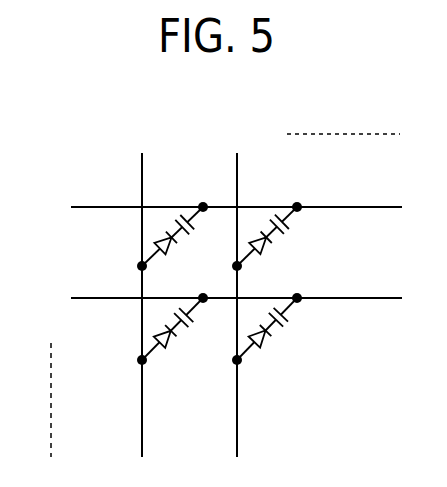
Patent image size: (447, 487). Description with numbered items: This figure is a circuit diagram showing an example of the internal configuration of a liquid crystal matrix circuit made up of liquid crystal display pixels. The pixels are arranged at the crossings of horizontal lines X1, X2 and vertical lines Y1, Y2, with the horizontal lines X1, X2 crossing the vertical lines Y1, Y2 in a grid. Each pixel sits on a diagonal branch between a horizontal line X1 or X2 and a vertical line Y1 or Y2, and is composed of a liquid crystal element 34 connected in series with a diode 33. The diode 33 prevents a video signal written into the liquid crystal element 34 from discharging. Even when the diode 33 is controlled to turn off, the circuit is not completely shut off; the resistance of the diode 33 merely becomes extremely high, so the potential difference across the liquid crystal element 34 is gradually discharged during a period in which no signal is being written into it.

The diode 33 is at (267, 345).
The liquid crystal element 34 is at (284, 327).
The row electrode line X1 is at (220, 206).
The row electrode line X2 is at (220, 301).
The column electrode line Y1 is at (143, 288).
The column electrode line Y2 is at (238, 288).